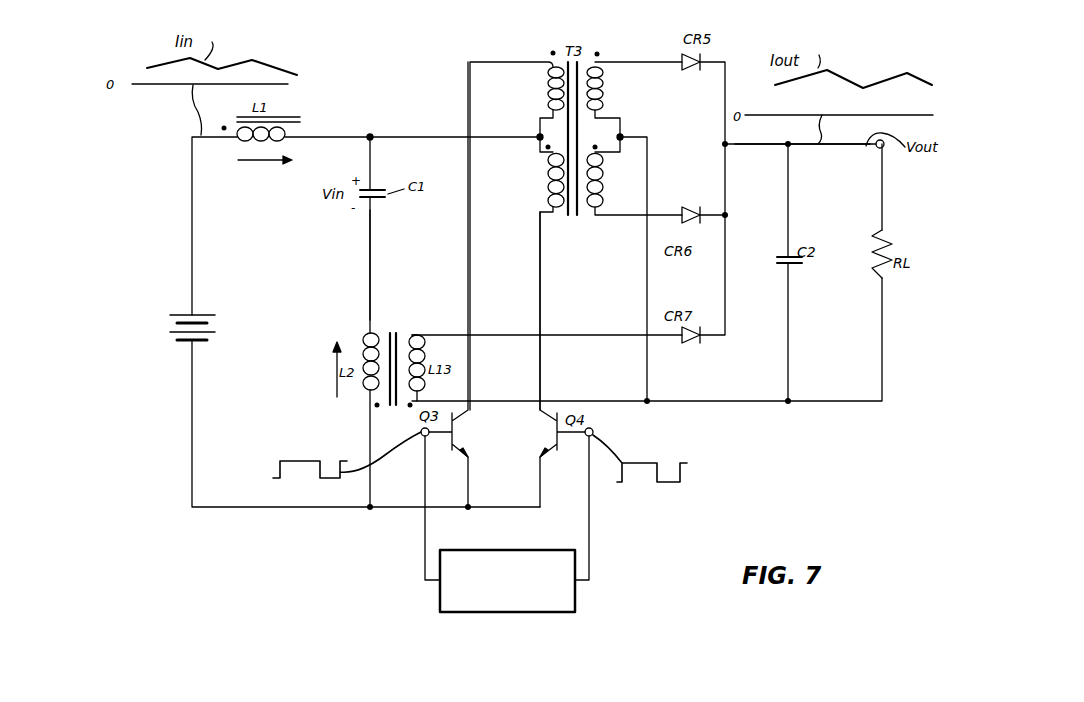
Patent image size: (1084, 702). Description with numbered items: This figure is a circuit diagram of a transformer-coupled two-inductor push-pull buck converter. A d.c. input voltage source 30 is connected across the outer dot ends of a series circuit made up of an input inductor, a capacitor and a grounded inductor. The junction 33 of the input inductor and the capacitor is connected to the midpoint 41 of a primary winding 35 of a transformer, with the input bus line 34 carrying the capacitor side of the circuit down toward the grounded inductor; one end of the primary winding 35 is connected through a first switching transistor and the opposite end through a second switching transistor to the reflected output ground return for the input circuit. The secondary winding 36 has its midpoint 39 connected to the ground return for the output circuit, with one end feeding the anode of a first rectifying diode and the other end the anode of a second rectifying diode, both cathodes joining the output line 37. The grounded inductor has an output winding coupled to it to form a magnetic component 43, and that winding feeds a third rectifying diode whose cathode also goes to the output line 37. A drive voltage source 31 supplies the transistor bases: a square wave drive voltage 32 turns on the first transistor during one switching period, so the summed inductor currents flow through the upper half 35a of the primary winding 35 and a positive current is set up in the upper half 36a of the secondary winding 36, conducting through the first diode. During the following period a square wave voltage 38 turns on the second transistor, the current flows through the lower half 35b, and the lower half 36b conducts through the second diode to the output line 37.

The d.c. input voltage source 30 is at (203, 317).
The drive voltage source 31 is at (533, 613).
The square wave drive voltage 32 is at (304, 461).
The junction 33 is at (372, 126).
The input bus line 34 is at (373, 296).
The primary winding 35 is at (553, 50).
The upper half of primary winding 35a is at (548, 98).
The lower half of primary winding 35b is at (548, 193).
The secondary winding 36 is at (603, 56).
The upper half of secondary winding 36a is at (605, 98).
The lower half of secondary winding 36b is at (612, 180).
The output line 37 is at (830, 149).
The square wave voltage 38 is at (642, 463).
The midpoint of secondary winding 39 is at (623, 137).
The midpoint of primary winding 41 is at (535, 137).
The magnetic component 43 is at (394, 331).